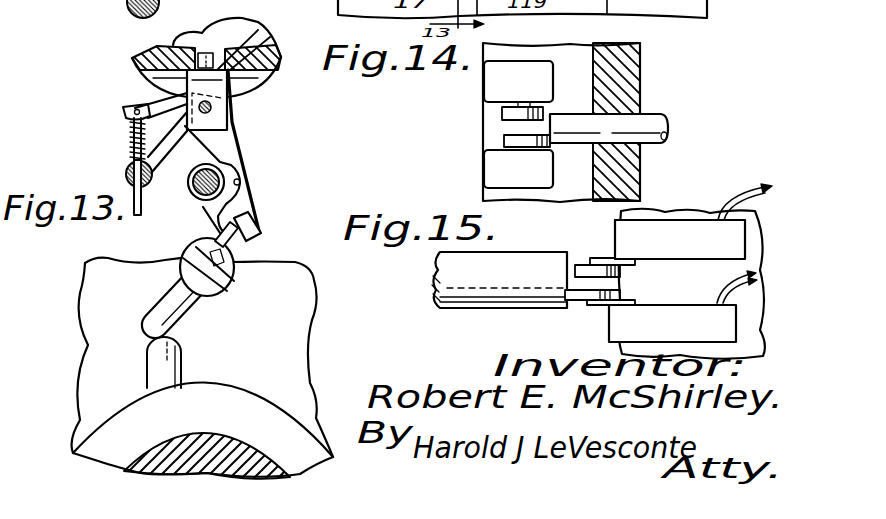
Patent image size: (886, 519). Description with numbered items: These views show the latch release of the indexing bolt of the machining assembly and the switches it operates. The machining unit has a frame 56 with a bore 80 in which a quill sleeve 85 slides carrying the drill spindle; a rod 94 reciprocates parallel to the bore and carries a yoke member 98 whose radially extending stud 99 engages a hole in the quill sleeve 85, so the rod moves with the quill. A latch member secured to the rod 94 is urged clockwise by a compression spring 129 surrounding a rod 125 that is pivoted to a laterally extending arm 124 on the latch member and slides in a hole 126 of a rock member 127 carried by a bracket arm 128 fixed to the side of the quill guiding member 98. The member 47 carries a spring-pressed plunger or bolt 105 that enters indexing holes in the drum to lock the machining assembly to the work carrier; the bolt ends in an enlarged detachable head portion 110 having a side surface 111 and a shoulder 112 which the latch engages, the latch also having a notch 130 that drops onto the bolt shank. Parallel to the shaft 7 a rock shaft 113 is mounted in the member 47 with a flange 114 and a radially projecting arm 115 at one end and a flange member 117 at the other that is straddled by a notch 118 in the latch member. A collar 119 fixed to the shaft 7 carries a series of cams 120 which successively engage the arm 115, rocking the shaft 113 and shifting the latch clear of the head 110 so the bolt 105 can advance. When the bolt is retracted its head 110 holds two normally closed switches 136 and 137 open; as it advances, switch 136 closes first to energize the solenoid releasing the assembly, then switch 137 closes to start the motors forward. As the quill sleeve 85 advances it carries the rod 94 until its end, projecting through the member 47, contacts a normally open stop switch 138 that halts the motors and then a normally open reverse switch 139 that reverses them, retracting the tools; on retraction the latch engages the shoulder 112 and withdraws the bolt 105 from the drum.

In FIG. 13, the shaft 7 is at (245, 452).
In FIG. 13, the member 47 is at (307, 346).
In FIG. 14, the member 47 is at (641, 68).
In FIG. 13, the frame 56 is at (263, 61).
In FIG. 13, the bore 80 is at (167, 45).
In FIG. 13, the quill sleeve 85 is at (249, 44).
In FIG. 13, the rod 94 is at (212, 107).
In FIG. 14, the rod 94 is at (657, 113).
In FIG. 13, the yoke member 98 is at (222, 118).
In FIG. 13, the stud 99 is at (208, 53).
In FIG. 13, the plunger or bolt 105 is at (207, 208).
In FIG. 15, the head portion 110 is at (490, 299).
In FIG. 13, the side surface 111 is at (188, 190).
In FIG. 13, the shoulder 112 is at (243, 163).
In FIG. 13, the rock shaft 113 is at (125, 2).
In FIG. 13, the flange 114 is at (229, 268).
In FIG. 13, the arm 115 is at (170, 292).
In FIG. 13, the flange member 117 is at (235, 243).
In FIG. 13, the notch 118 is at (252, 210).
In FIG. 13, the collar 119 is at (237, 395).
In FIG. 13, the cams 120 is at (174, 360).
In FIG. 13, the arm 124 is at (125, 107).
In FIG. 13, the rod 125 is at (135, 217).
In FIG. 13, the hole 126 is at (127, 167).
In FIG. 13, the rock member 127 is at (126, 176).
In FIG. 13, the bracket arm 128 is at (238, 137).
In FIG. 13, the compression spring 129 is at (130, 135).
In FIG. 13, the notch 130 is at (241, 183).
In FIG. 15, the switch 136 is at (578, 265).
In FIG. 15, the switch 137 is at (572, 300).
In FIG. 14, the normally open switch 138 is at (493, 163).
In FIG. 14, the normally open switch 139 is at (501, 85).